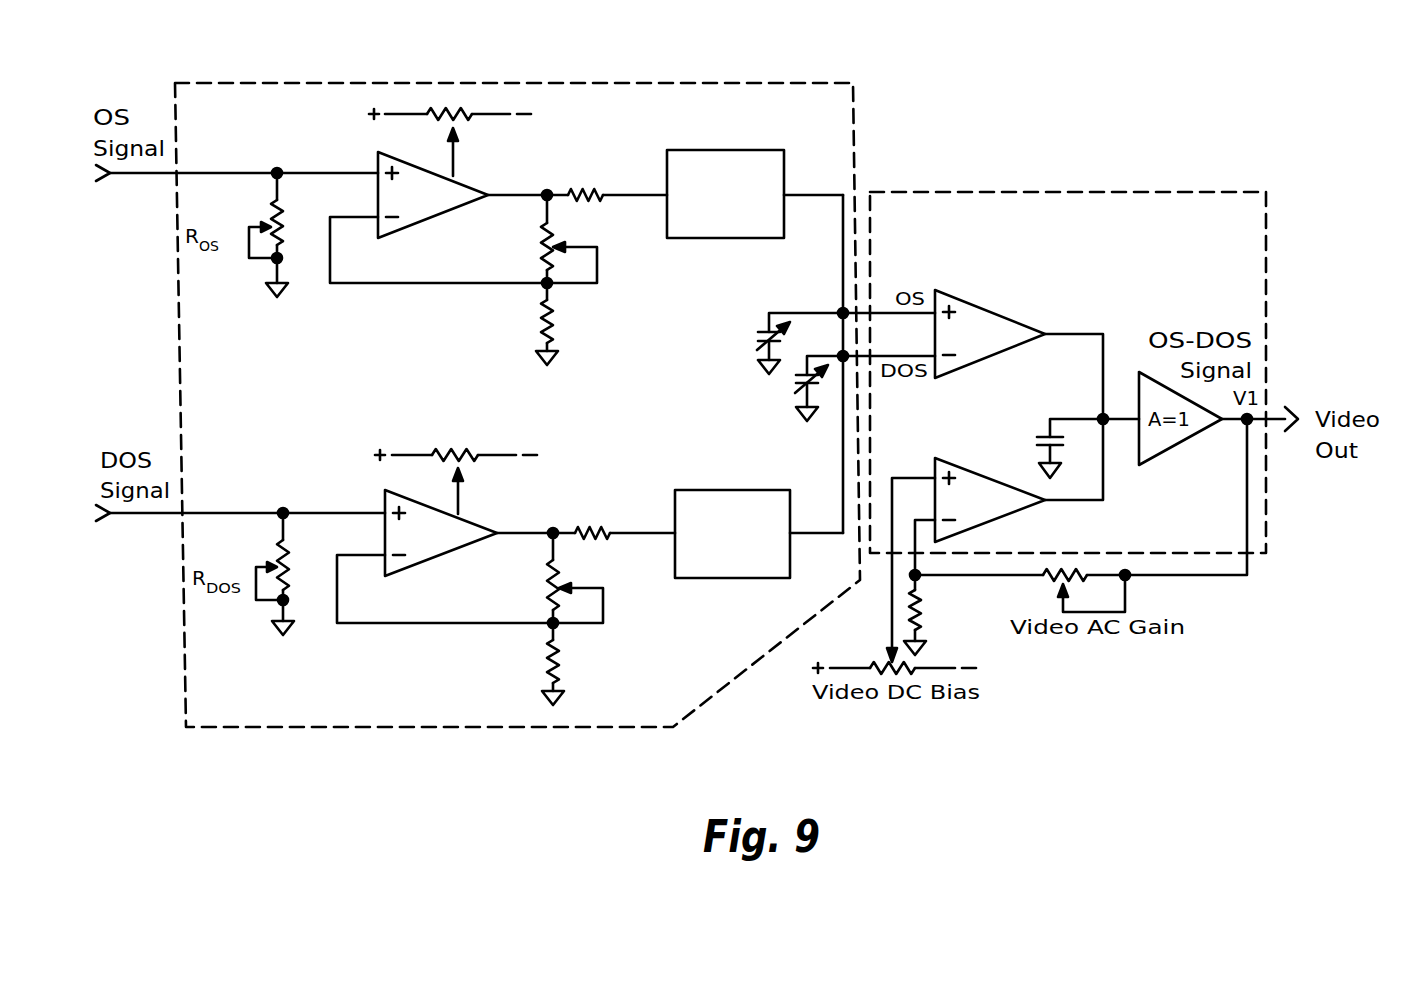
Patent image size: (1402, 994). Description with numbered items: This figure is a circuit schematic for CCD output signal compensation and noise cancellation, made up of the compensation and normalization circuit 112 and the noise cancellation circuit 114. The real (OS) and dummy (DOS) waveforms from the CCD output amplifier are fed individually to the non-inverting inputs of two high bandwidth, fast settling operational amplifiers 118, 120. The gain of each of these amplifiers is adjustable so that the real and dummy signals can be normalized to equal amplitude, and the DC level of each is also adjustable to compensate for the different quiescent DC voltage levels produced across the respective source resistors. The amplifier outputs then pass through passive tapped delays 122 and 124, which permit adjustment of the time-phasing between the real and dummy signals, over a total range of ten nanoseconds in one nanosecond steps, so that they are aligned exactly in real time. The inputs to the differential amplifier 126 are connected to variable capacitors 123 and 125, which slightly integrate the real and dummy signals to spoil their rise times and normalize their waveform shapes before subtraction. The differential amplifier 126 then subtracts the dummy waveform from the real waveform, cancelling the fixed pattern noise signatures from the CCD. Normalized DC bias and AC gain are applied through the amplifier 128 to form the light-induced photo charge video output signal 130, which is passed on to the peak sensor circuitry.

The compensation and normalization circuit 112 is at (816, 82).
The noise cancellation circuit 114 is at (1177, 191).
The operational amplifier 118 is at (413, 218).
The operational amplifier 120 is at (418, 557).
The passive tapped delay 122 is at (722, 157).
The variable capacitor 123 is at (737, 349).
The passive tapped delay 124 is at (728, 497).
The variable capacitor 125 is at (744, 411).
The differential amplifier 126 is at (999, 347).
The amplifier 128 is at (1003, 512).
The video output signal 130 is at (1280, 410).